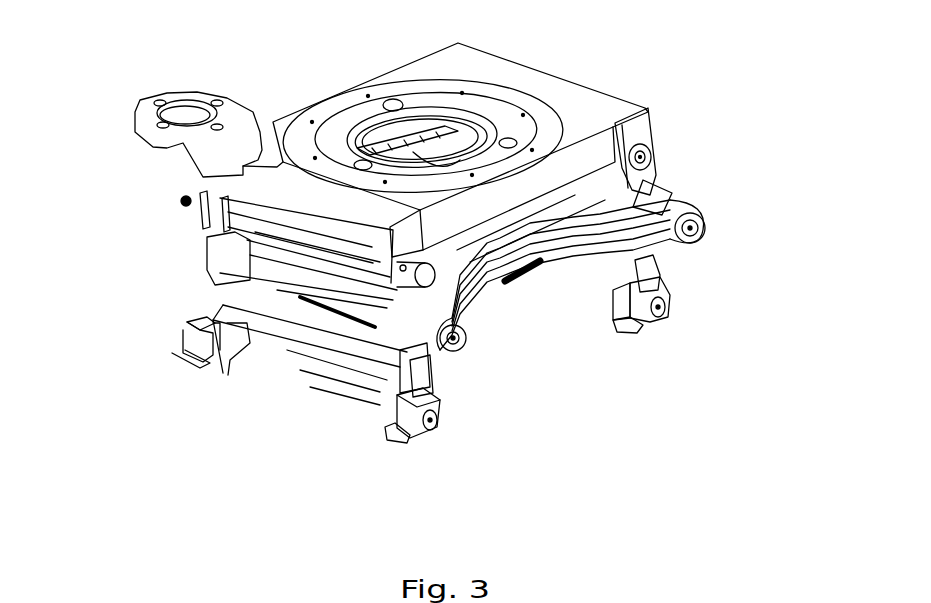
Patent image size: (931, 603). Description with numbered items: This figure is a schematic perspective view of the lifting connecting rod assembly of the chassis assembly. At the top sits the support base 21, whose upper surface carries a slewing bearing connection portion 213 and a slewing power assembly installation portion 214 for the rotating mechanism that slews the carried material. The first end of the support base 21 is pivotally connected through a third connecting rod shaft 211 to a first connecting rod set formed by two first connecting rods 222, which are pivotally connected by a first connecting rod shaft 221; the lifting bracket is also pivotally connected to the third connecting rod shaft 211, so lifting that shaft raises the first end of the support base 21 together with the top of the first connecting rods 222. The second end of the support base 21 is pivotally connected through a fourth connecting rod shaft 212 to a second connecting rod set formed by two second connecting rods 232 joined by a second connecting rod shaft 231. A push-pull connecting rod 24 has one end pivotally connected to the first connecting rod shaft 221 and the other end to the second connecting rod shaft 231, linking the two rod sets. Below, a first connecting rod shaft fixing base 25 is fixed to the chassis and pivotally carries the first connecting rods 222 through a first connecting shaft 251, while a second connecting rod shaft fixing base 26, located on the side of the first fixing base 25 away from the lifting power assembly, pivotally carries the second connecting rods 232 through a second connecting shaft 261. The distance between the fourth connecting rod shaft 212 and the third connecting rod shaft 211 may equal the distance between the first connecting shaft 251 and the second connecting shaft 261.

The support base 21 is at (563, 98).
The third connecting rod shaft 211 is at (333, 248).
The fourth connecting rod shaft 212 is at (645, 165).
The slewing bearing connection portion 213 is at (483, 92).
The slewing power assembly installation portion 214 is at (170, 115).
The first connecting rod shaft 221 is at (453, 338).
The first connecting rod 222 is at (233, 255).
The second connecting rod shaft 231 is at (690, 228).
The second connecting rod 232 is at (657, 183).
The push-pull connecting rod 24 is at (545, 260).
The first connecting rod shaft fixing base 25 is at (188, 347).
The first connecting shaft 251 is at (430, 420).
The second connecting rod shaft fixing base 26 is at (643, 325).
The second connecting shaft 261 is at (660, 307).